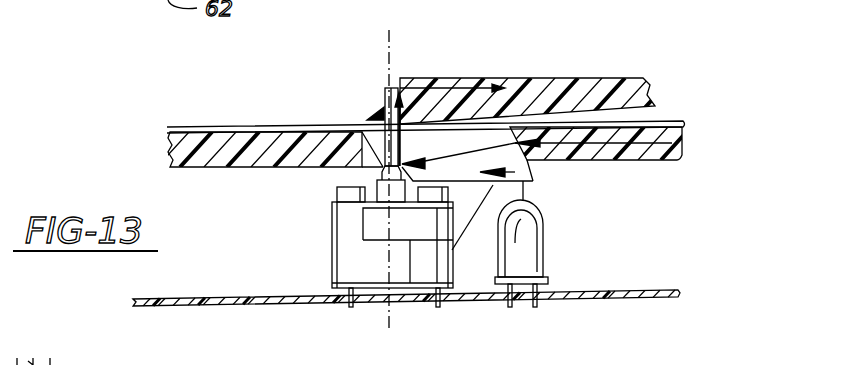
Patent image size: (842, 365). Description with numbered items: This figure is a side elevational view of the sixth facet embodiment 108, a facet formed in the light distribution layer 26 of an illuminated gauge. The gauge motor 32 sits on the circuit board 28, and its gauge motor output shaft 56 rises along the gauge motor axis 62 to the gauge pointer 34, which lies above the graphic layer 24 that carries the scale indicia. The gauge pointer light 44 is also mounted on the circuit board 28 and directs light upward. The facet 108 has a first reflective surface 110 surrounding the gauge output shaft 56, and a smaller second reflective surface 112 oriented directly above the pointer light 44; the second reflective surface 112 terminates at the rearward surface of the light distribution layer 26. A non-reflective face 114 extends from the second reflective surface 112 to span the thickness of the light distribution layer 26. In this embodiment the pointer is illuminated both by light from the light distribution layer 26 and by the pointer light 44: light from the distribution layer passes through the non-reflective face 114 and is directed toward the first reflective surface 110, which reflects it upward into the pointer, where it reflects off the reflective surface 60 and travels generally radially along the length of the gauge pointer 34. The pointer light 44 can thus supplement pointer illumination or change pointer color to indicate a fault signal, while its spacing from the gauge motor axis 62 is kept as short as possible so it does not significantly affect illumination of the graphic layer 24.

The graphic layer 24 is at (668, 122).
The light distribution layer 26 is at (652, 160).
The circuit board 28 is at (577, 297).
The gauge motor 32 is at (333, 263).
The gauge pointer 34 is at (593, 77).
The gauge pointer light 44 is at (543, 240).
The gauge motor output shaft 56 is at (386, 92).
The reflective surface 60 is at (368, 115).
The gauge motor axis 62 is at (392, 323).
The sixth facet embodiment 108 is at (430, 140).
The first reflective surface 110 is at (380, 157).
The second reflective surface 112 is at (527, 173).
The non-reflective face 114 is at (505, 131).